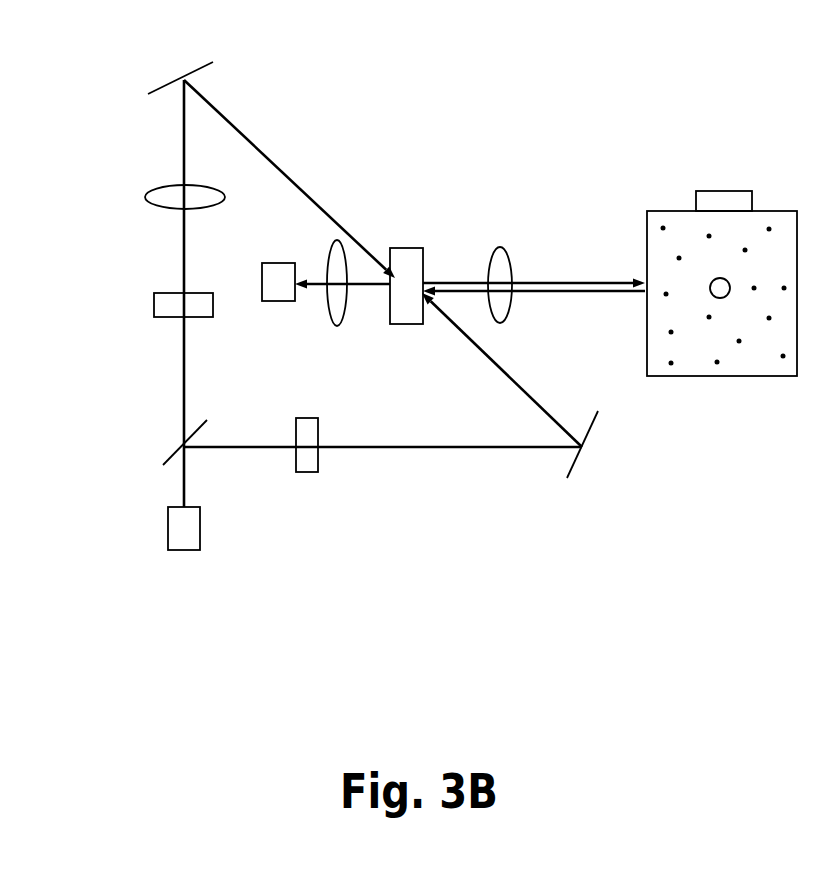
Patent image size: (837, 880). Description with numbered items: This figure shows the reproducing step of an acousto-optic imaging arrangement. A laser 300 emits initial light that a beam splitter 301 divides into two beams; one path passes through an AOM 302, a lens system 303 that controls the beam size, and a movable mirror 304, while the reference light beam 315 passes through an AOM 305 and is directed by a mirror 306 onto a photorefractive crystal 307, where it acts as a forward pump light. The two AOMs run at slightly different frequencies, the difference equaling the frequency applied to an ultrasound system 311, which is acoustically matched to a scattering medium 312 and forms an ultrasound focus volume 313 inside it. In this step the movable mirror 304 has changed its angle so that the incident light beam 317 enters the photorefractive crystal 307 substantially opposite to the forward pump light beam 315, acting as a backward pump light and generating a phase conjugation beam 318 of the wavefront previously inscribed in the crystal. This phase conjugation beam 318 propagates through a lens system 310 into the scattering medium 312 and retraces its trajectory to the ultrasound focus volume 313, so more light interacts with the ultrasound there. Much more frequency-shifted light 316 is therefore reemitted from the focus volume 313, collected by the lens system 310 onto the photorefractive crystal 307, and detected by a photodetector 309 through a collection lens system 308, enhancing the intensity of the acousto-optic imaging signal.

The laser 300 is at (192, 540).
The beam splitter 301 is at (168, 450).
The AOM 302 is at (168, 306).
The lens system 303 is at (155, 194).
The movable mirror 304 is at (162, 84).
The AOM 305 is at (310, 466).
The mirror 306 is at (580, 475).
The photorefractive crystal 307 is at (408, 320).
The collection lens system 308 is at (338, 312).
The photodetector 309 is at (273, 293).
The lens system 310 is at (500, 257).
The ultrasound system 311 is at (722, 208).
The scattering medium 312 is at (758, 362).
The ultrasound focus volume 313 is at (722, 286).
The reference light beam 315 is at (505, 372).
The frequency-shifted light 316 is at (603, 290).
The incident light beam 317 is at (328, 210).
The phase conjugation beam 318 is at (567, 278).